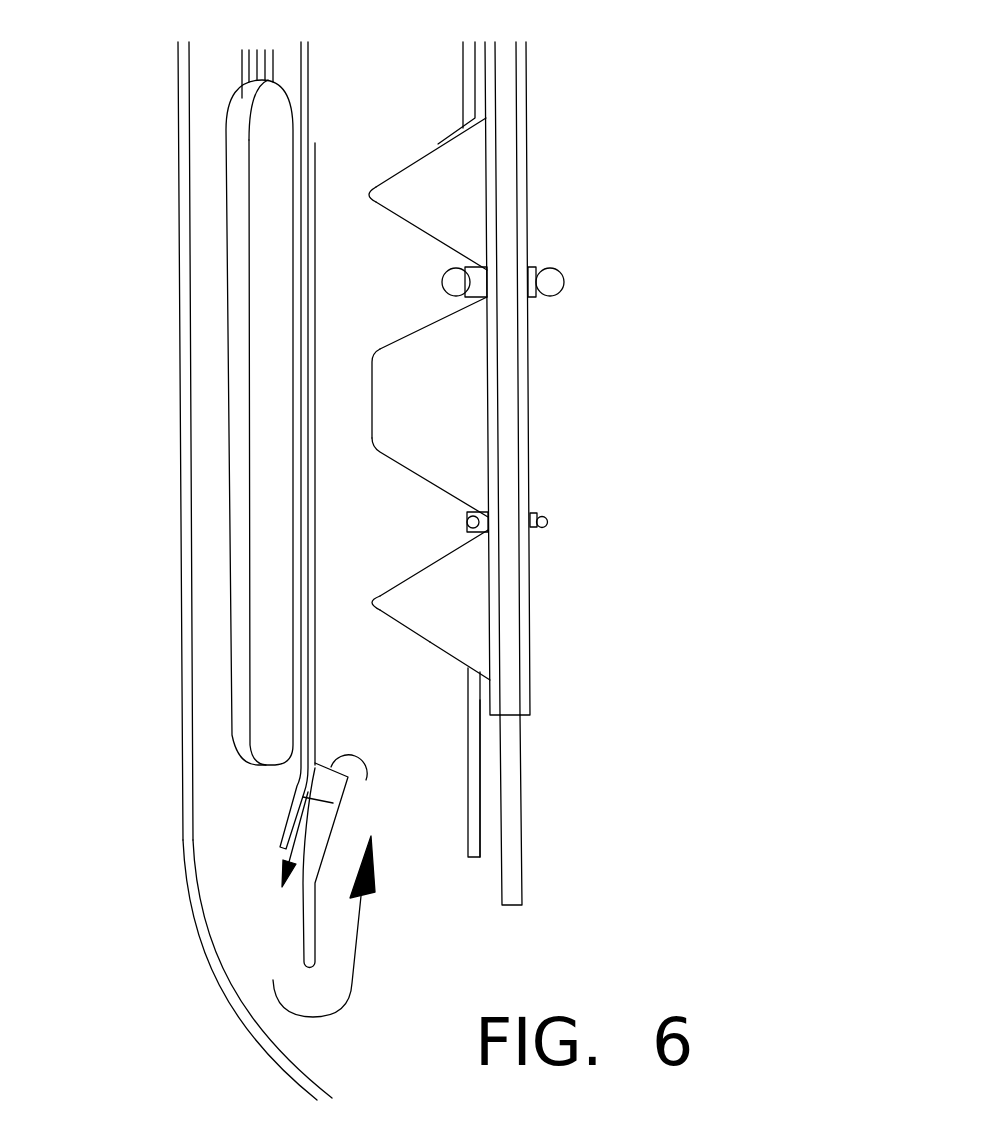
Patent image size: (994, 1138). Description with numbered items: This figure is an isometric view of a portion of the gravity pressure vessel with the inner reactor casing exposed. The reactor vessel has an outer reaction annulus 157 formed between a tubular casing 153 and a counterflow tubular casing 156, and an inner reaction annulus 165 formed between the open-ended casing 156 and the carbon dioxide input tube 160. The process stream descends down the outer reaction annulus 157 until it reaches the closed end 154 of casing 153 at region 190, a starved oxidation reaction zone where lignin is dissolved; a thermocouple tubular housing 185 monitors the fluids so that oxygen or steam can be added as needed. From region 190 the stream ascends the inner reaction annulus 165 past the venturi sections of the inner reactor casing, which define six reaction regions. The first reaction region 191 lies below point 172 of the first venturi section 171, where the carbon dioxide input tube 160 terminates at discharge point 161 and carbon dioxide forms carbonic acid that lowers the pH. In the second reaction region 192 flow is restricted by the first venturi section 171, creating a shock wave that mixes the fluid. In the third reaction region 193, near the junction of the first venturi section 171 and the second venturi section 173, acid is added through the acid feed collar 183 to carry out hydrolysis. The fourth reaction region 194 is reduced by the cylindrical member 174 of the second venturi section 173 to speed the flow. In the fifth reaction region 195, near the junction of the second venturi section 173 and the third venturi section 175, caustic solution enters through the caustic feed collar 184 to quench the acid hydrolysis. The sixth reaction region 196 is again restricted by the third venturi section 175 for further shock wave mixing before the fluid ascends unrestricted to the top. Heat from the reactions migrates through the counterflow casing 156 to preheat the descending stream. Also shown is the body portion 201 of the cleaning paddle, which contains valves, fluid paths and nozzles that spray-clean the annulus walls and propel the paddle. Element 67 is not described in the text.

The guidewire 67 is at (522, 905).
The tubular casing 153 is at (180, 380).
The closed end 154 is at (230, 1005).
The counterflow tubular casing 156 is at (301, 93).
The outer reaction annulus 157 is at (282, 861).
The carbon dioxide input tube 160 is at (530, 675).
The discharge point 161 is at (530, 715).
The inner reaction annulus 165 is at (423, 90).
The first venturi section 171 is at (430, 645).
The point of first venturi section 172 is at (373, 597).
The second venturi section 173 is at (413, 332).
The cylindrical member 174 is at (375, 428).
The third venturi section 175 is at (440, 145).
The acid feed collar 183 is at (548, 522).
The caustic feed collar 184 is at (550, 282).
The thermocouple tubular housing 185 is at (480, 783).
The region 190 is at (371, 926).
The first reaction region 191 is at (436, 762).
The second reaction region 192 is at (374, 597).
The third reaction region 193 is at (415, 544).
The fourth reaction region 194 is at (354, 376).
The fifth reaction region 195 is at (414, 245).
The sixth reaction region 196 is at (354, 171).
The body portion 201 is at (225, 232).